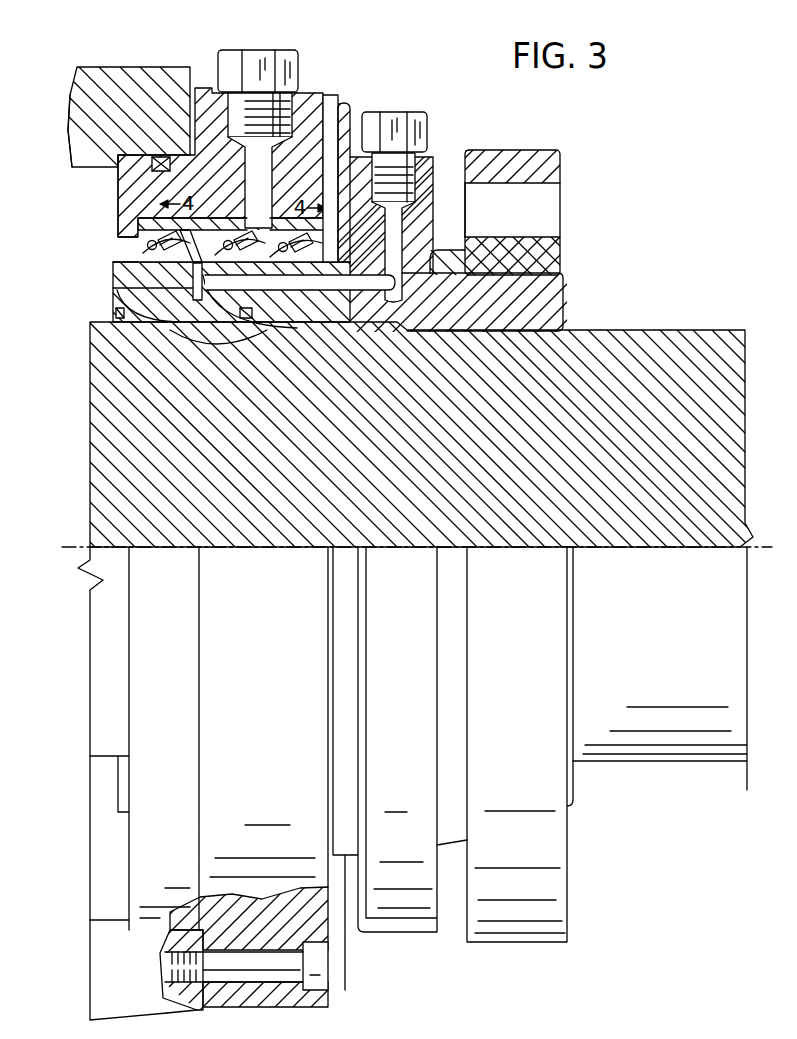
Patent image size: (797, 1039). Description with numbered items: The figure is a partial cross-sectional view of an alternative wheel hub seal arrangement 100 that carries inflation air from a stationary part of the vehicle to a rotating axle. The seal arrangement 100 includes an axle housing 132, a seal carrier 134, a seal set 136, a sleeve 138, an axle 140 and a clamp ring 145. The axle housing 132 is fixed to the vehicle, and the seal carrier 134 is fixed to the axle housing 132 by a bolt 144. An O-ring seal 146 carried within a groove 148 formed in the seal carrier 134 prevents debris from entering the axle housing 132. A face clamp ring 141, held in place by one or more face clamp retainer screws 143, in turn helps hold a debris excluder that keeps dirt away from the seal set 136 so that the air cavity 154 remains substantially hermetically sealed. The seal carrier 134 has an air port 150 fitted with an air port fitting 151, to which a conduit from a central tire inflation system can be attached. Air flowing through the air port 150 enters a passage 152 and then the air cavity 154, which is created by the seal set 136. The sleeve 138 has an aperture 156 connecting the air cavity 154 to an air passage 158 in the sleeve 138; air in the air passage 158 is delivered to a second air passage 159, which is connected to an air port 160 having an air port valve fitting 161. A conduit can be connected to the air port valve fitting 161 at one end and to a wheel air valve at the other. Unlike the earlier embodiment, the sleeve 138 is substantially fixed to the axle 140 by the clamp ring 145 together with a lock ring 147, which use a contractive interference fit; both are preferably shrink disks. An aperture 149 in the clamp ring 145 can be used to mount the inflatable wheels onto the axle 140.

The seal arrangement 100 is at (582, 180).
The axle housing 132 is at (130, 77).
The seal carrier 134 is at (288, 250).
The seal set 136 is at (282, 215).
The sleeve 138 is at (557, 300).
The axle 140 is at (660, 337).
The face clamp ring 141 is at (343, 113).
The face clamp retainer screw 143 is at (395, 125).
The bolt 144 is at (253, 960).
The clamp ring 145 is at (522, 162).
The O-ring seal 146 is at (157, 167).
The lock ring 147 is at (548, 262).
The groove 148 is at (148, 180).
The aperture 149 is at (545, 201).
The air port 150 is at (212, 92).
The air port fitting 151 is at (250, 72).
The passage 152 is at (255, 165).
The air cavity 154 is at (105, 279).
The aperture 156 is at (120, 297).
The air passage 158 is at (95, 343).
The second air passage 159 is at (395, 243).
The air port 160 is at (395, 187).
The air port valve fitting 161 is at (397, 124).